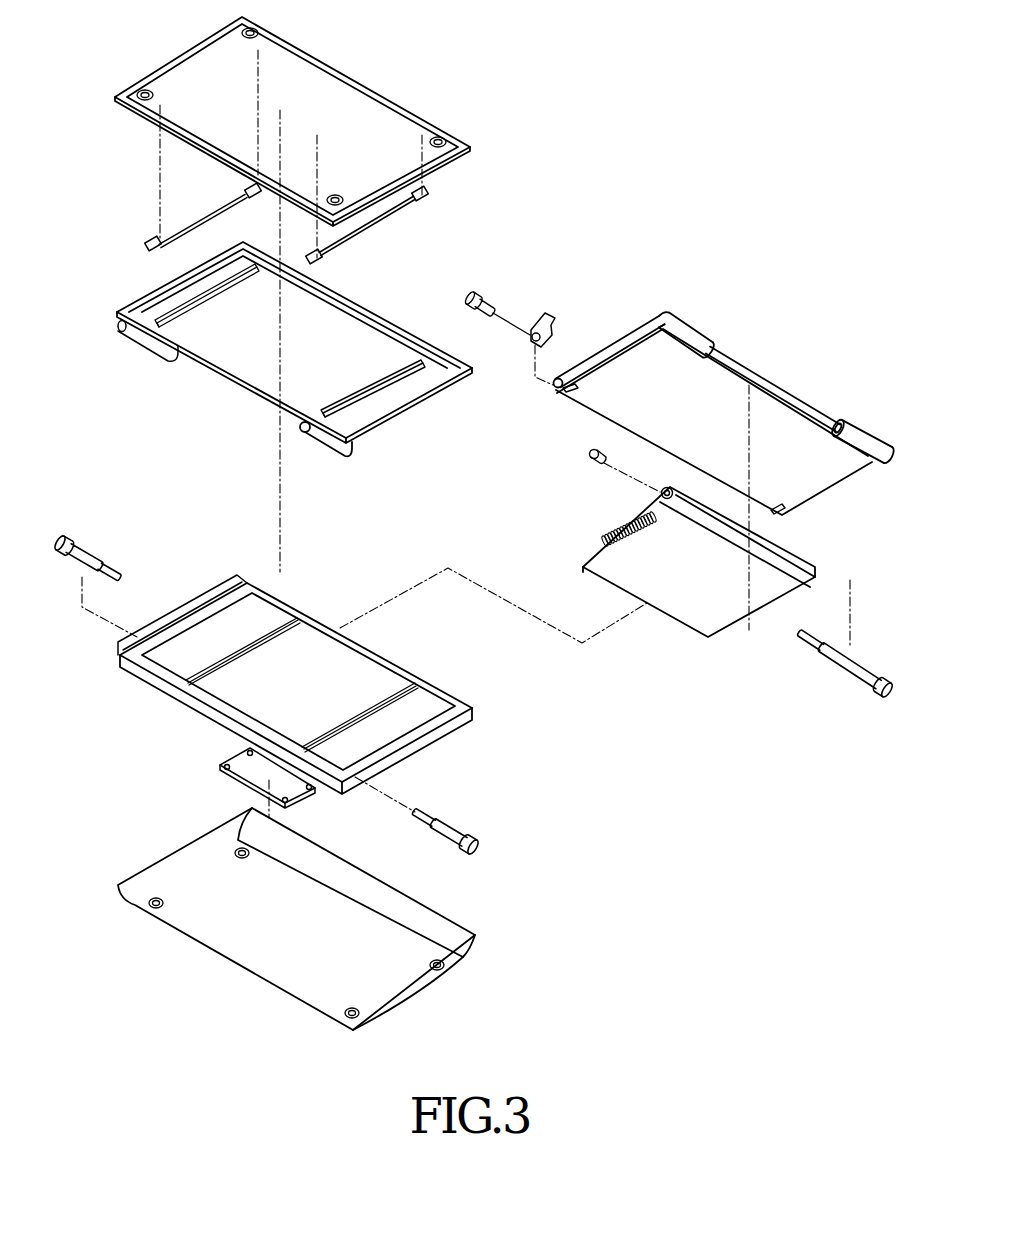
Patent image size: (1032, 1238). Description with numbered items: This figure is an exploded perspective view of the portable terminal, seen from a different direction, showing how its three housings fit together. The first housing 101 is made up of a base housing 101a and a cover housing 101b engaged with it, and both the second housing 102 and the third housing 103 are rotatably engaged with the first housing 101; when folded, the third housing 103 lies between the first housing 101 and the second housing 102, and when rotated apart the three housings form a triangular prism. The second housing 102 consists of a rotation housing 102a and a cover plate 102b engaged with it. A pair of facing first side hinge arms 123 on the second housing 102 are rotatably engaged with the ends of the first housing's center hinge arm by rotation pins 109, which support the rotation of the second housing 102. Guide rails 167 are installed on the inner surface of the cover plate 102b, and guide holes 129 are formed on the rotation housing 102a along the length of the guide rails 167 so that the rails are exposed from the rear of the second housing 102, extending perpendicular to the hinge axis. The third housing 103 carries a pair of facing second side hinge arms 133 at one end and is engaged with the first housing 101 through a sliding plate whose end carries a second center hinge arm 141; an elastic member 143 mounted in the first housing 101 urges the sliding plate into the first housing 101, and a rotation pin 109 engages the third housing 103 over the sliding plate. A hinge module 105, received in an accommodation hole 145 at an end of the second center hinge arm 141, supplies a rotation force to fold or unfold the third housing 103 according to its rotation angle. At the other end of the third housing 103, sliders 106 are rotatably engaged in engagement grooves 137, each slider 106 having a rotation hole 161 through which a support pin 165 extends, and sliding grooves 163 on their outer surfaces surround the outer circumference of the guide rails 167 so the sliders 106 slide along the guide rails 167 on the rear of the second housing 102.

The first housing 101 is at (92, 747).
The base housing 101a is at (182, 829).
The cover housing 101b is at (175, 731).
The second housing 102 is at (598, 105).
The rotation housing 102a is at (405, 326).
The cover plate 102b is at (497, 129).
The third housing 103 is at (782, 427).
The hinge module 105 is at (587, 452).
The slider 106 is at (547, 330).
The rotation pin 109 is at (88, 548).
The first side hinge arm 123 is at (150, 338).
The guide hole 129 is at (197, 300).
The second side hinge arm 133 is at (687, 338).
The engagement groove 137 is at (565, 395).
The second center hinge arm 141 is at (793, 548).
The elastic member 143 is at (605, 534).
The accommodation hole 145 is at (660, 493).
The rotation hole 161 is at (530, 336).
The sliding groove 163 is at (551, 313).
The support pin 165 is at (488, 298).
The guide rail 167 is at (197, 223).